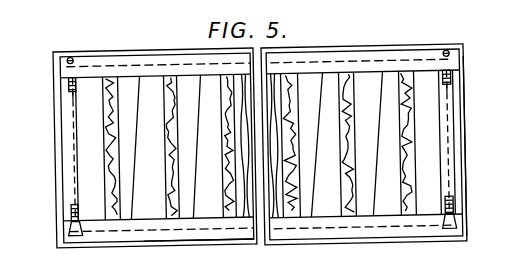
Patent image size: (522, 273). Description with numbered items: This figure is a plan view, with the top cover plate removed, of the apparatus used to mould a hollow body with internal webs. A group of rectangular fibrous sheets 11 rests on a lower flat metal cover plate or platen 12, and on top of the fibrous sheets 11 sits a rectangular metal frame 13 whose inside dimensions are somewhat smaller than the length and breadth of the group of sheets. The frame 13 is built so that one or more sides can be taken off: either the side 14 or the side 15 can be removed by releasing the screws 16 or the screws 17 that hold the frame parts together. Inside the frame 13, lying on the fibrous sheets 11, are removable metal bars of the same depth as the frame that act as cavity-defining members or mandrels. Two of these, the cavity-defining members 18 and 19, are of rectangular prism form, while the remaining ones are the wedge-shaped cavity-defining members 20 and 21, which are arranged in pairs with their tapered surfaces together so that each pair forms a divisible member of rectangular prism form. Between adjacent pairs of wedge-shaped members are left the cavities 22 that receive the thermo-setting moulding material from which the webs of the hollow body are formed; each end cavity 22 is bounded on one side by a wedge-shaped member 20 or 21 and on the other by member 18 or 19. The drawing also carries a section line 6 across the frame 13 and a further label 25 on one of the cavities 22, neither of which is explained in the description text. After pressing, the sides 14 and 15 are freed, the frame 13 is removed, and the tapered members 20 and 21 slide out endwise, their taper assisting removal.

The section line 6 is at (41, 160).
The fibrous sheets 11 is at (157, 230).
The lower flat metal cover plate or platen 12 is at (463, 100).
The rectangular metal frame 13 is at (70, 117).
The side of the frame 14 is at (163, 55).
The side of the frame 15 is at (112, 230).
The screws 16 is at (66, 86).
The screws 17 is at (70, 215).
The cavity-defining member 18 is at (88, 172).
The cavity-defining member 19 is at (431, 181).
The wedge-shaped cavity-defining member 20 is at (132, 162).
The wedge-shaped cavity-defining member 21 is at (153, 214).
The cavities 22 is at (137, 125).
The filler strip 25 is at (165, 89).